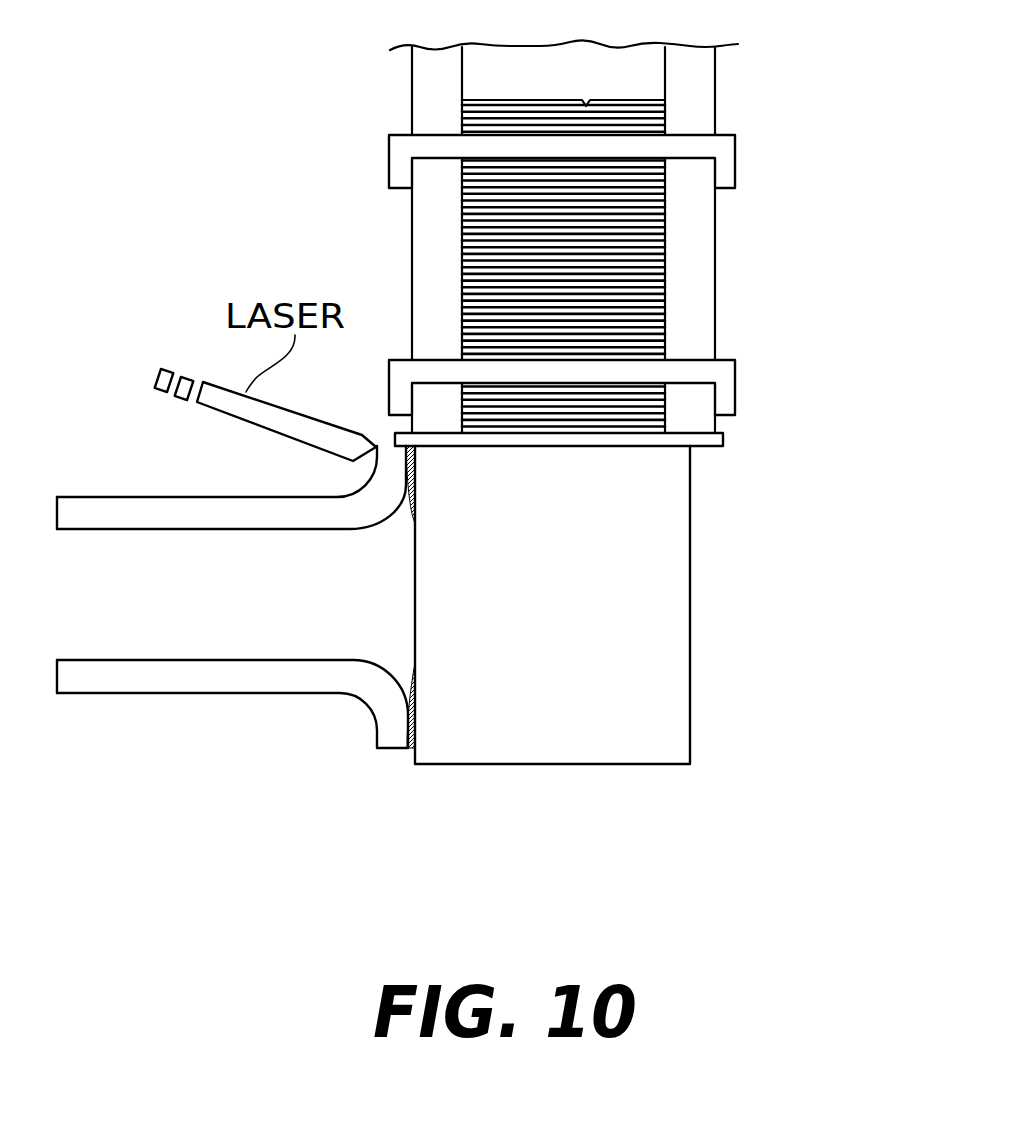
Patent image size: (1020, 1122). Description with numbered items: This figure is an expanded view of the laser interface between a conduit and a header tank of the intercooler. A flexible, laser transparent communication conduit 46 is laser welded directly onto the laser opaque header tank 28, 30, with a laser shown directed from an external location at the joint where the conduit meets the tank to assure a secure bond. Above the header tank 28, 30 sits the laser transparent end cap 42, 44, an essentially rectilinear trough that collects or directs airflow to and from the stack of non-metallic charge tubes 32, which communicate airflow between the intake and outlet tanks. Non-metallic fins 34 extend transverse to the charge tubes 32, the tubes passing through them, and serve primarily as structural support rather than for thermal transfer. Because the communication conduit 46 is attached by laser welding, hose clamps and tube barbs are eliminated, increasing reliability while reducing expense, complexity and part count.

The intake header tank 28 is at (644, 605).
The outlet header tank 30 is at (692, 568).
The non-metallic charge tubes 32 is at (645, 263).
The non-metallic fins 34 is at (698, 142).
The end cap 42 is at (650, 413).
The end cap 44 is at (725, 440).
The communication conduit 46 is at (185, 693).